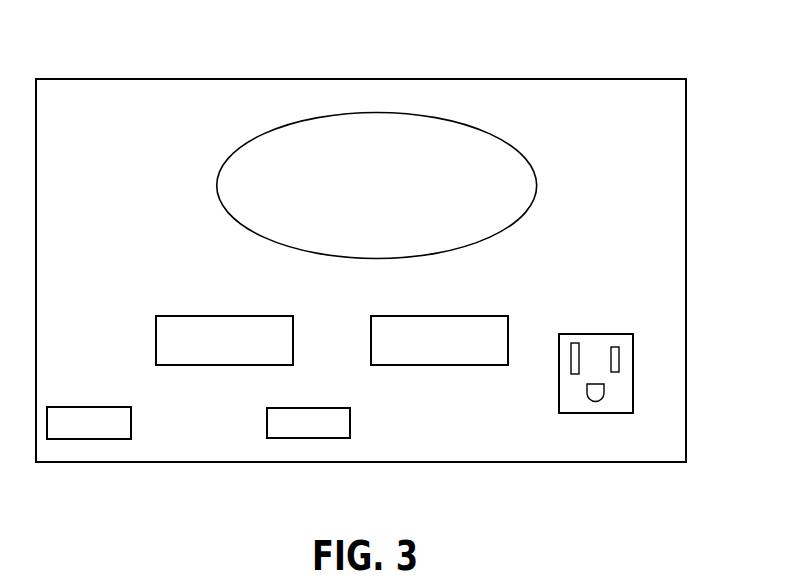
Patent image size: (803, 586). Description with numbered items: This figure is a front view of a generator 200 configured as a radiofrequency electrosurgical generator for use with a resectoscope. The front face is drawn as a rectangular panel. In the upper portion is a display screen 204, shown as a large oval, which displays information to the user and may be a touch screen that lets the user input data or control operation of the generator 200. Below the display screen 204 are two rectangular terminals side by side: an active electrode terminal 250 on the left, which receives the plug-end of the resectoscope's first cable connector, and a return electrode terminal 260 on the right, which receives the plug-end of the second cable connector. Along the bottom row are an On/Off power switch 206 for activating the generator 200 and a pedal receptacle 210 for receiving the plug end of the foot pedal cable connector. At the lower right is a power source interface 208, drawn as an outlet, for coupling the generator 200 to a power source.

The generator 200 is at (507, 43).
The display screen 204 is at (480, 128).
The On/Off power switch 206 is at (87, 407).
The power source interface 208 is at (607, 334).
The pedal receptacle 210 is at (309, 408).
The active electrode terminal 250 is at (238, 316).
The return electrode terminal 260 is at (463, 316).